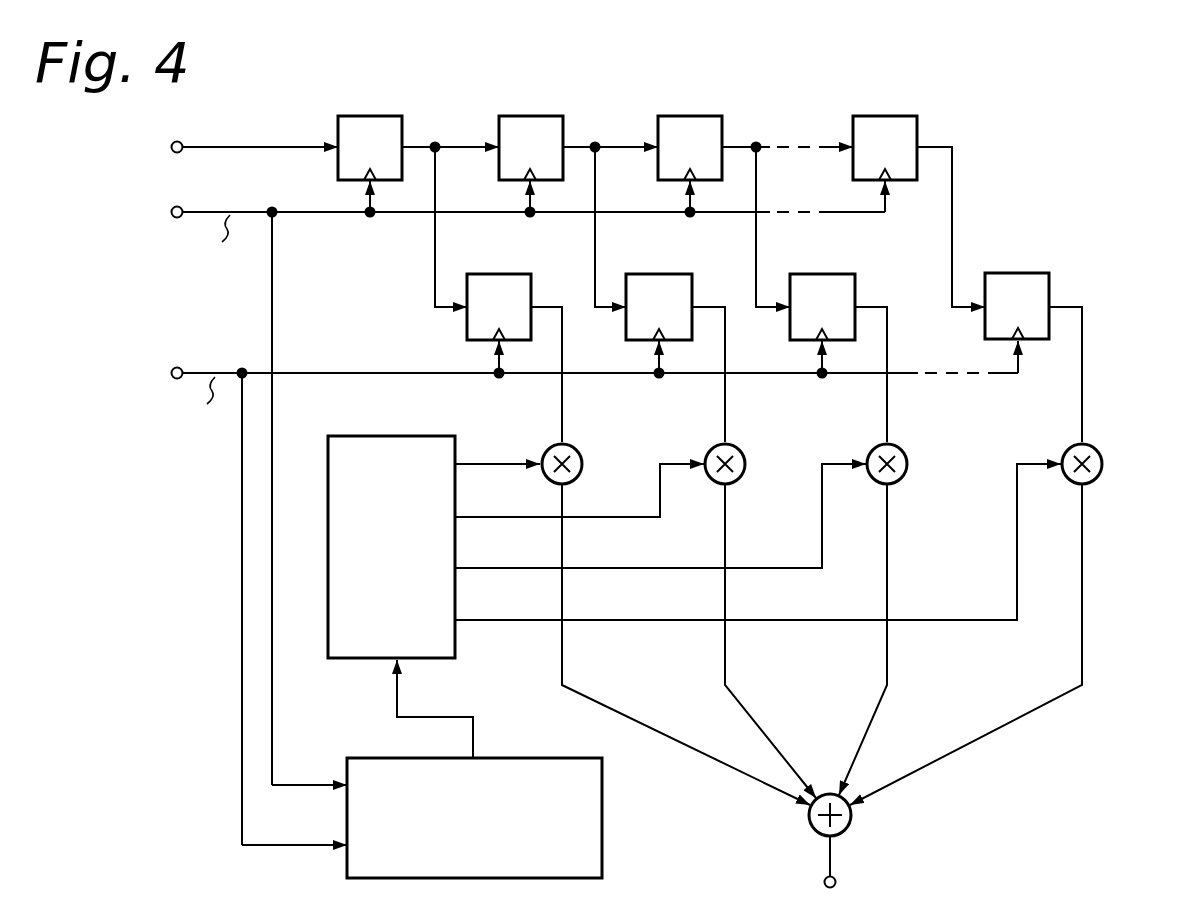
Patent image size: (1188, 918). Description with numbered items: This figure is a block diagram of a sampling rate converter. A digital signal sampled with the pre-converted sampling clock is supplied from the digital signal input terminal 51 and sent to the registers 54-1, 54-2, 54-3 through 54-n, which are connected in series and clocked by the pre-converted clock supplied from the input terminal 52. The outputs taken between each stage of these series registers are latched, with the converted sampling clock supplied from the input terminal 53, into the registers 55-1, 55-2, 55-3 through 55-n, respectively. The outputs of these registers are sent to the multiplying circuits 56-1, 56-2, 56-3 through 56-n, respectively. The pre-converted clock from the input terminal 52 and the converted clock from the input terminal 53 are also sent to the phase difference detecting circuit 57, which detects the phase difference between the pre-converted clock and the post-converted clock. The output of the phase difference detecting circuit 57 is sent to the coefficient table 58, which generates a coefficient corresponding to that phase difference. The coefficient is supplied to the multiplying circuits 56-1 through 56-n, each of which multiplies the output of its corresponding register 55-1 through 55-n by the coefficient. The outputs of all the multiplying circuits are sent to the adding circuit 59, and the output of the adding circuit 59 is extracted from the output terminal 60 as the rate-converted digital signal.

The digital signal input terminal 51 is at (172, 148).
The sampling clock input terminal 52 is at (172, 213).
The sampling clock input terminal 53 is at (172, 369).
The register 54-1 is at (364, 114).
The register 54-2 is at (527, 114).
The register 54-3 is at (687, 114).
The register 54-n is at (882, 114).
The register 55-1 is at (499, 273).
The register 55-2 is at (666, 273).
The register 55-3 is at (835, 258).
The register 55-n is at (1023, 270).
The multiplying circuit 56-1 is at (591, 457).
The multiplying circuit 56-2 is at (752, 454).
The multiplying circuit 56-3 is at (915, 451).
The multiplying circuit 56-n is at (1103, 445).
The phase difference detecting circuit 57 is at (604, 818).
The coefficient table 58 is at (350, 434).
The adding circuit 59 is at (856, 820).
The output terminal 60 is at (838, 886).